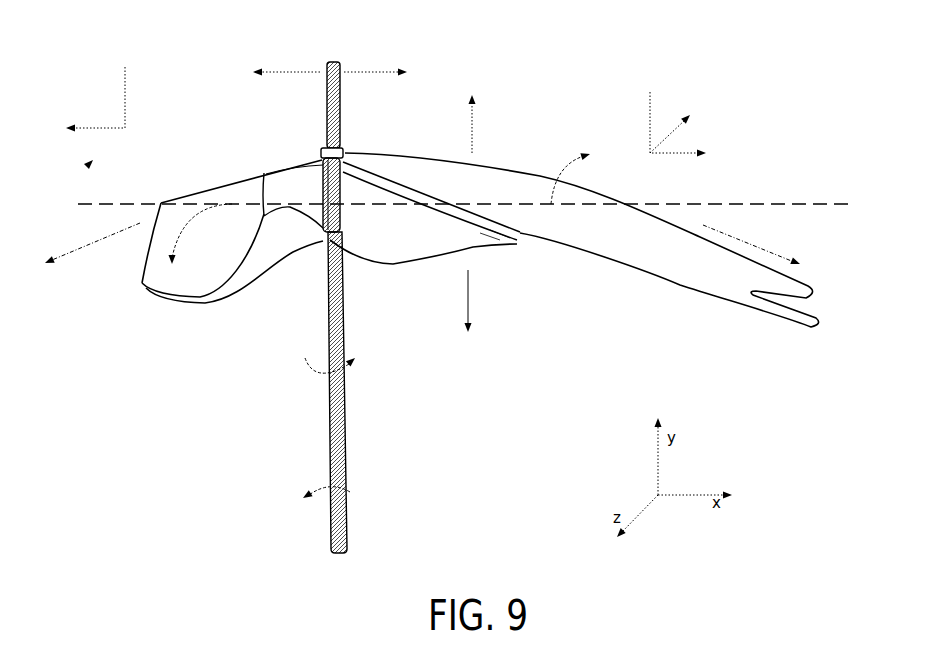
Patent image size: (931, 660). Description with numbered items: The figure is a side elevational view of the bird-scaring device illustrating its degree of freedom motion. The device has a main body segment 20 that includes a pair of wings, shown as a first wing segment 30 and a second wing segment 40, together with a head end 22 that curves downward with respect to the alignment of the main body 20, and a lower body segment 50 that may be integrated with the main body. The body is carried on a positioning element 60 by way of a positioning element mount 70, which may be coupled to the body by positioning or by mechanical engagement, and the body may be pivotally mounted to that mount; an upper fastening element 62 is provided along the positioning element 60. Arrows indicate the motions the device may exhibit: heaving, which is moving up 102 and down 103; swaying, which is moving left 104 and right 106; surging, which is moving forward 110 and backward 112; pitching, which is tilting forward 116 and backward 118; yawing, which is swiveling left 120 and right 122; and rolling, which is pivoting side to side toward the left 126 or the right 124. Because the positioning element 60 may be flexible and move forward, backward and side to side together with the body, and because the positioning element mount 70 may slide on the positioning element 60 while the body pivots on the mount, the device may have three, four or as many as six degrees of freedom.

The main body segment 20 is at (480, 307).
The head end 22 is at (198, 303).
The first wing segment 30 is at (211, 192).
The second wing segment 40 is at (529, 184).
The lower body segment 50 is at (397, 256).
The positioning element 60 is at (337, 450).
The upper fastening element 62 is at (332, 151).
The positioning element mount 70 is at (318, 248).
The moving up 102 is at (476, 135).
The moving down 103 is at (466, 312).
The moving left 104 is at (377, 68).
The moving right 106 is at (284, 70).
The moving forward 110 is at (125, 96).
The moving backward 112 is at (648, 102).
The tilting forward 116 is at (180, 222).
The tilting backward 118 is at (565, 176).
The swiveling left 120 is at (350, 492).
The swiveling right 122 is at (325, 378).
The pivoting toward the right 124 is at (105, 240).
The pivoting toward the left 126 is at (773, 253).